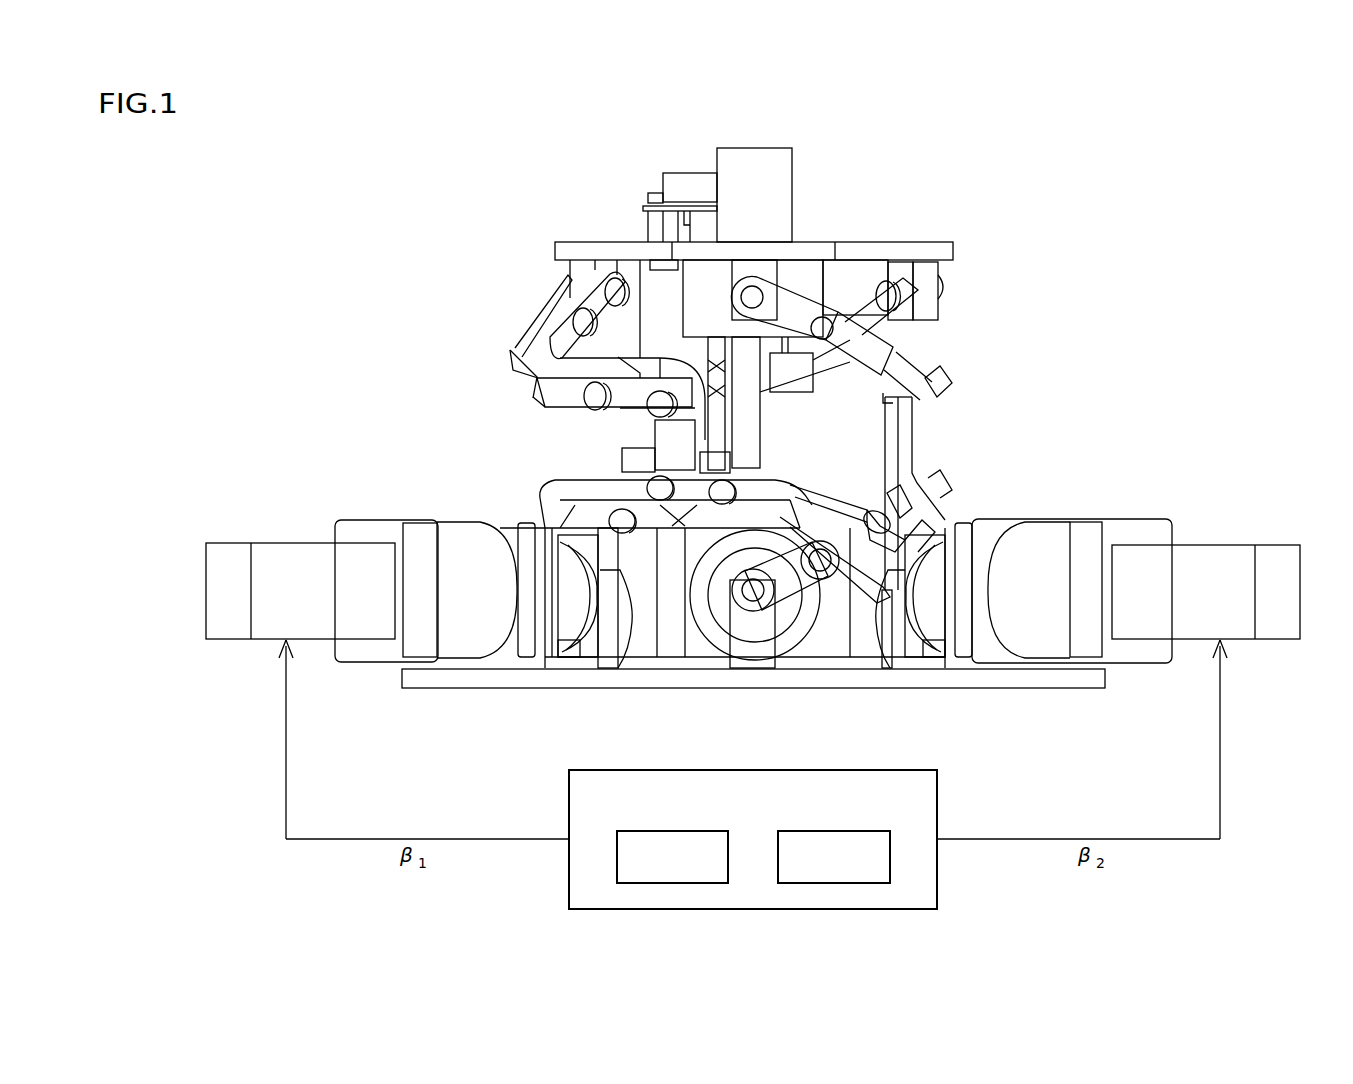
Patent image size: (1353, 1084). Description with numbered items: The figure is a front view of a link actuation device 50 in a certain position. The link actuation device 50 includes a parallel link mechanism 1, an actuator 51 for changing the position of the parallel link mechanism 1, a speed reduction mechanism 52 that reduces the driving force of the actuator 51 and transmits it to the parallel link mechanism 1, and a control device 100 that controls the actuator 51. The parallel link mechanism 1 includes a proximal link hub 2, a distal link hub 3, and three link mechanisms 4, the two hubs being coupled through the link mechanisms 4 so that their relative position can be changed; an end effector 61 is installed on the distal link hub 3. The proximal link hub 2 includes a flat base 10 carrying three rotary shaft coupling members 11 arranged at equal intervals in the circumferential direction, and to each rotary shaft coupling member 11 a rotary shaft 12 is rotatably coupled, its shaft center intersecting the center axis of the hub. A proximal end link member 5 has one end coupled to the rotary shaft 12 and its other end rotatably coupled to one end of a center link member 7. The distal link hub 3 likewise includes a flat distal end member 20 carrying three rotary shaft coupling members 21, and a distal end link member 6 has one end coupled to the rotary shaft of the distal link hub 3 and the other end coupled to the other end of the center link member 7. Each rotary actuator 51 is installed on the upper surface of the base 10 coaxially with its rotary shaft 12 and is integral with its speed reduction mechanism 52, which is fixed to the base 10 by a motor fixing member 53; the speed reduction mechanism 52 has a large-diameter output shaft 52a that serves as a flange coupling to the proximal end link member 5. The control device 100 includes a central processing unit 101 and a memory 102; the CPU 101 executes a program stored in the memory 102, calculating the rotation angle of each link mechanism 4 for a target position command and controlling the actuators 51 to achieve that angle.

The parallel link mechanism 1 is at (980, 365).
The proximal link hub 2 is at (428, 695).
The distal link hub 3 is at (566, 240).
The link mechanism 4 is at (505, 320).
The proximal end link member 5 is at (535, 498).
The distal end link member 6 is at (512, 376).
The center link member 7 is at (655, 432).
The base 10 is at (456, 690).
The rotary shaft coupling member 11 is at (767, 638).
The rotary shaft 12 is at (615, 688).
The distal end member 20 is at (936, 250).
The rotary shaft coupling member 21 is at (925, 283).
The link actuation device 50 is at (528, 176).
The actuator 51 is at (310, 540).
The speed reduction mechanism 52 is at (458, 520).
The output shaft 52a is at (568, 688).
The motor fixing member 53 is at (542, 640).
The end effector 61 is at (795, 210).
The control device 100 is at (938, 800).
The central processing unit (CPU) 101 is at (682, 831).
The memory 102 is at (840, 831).